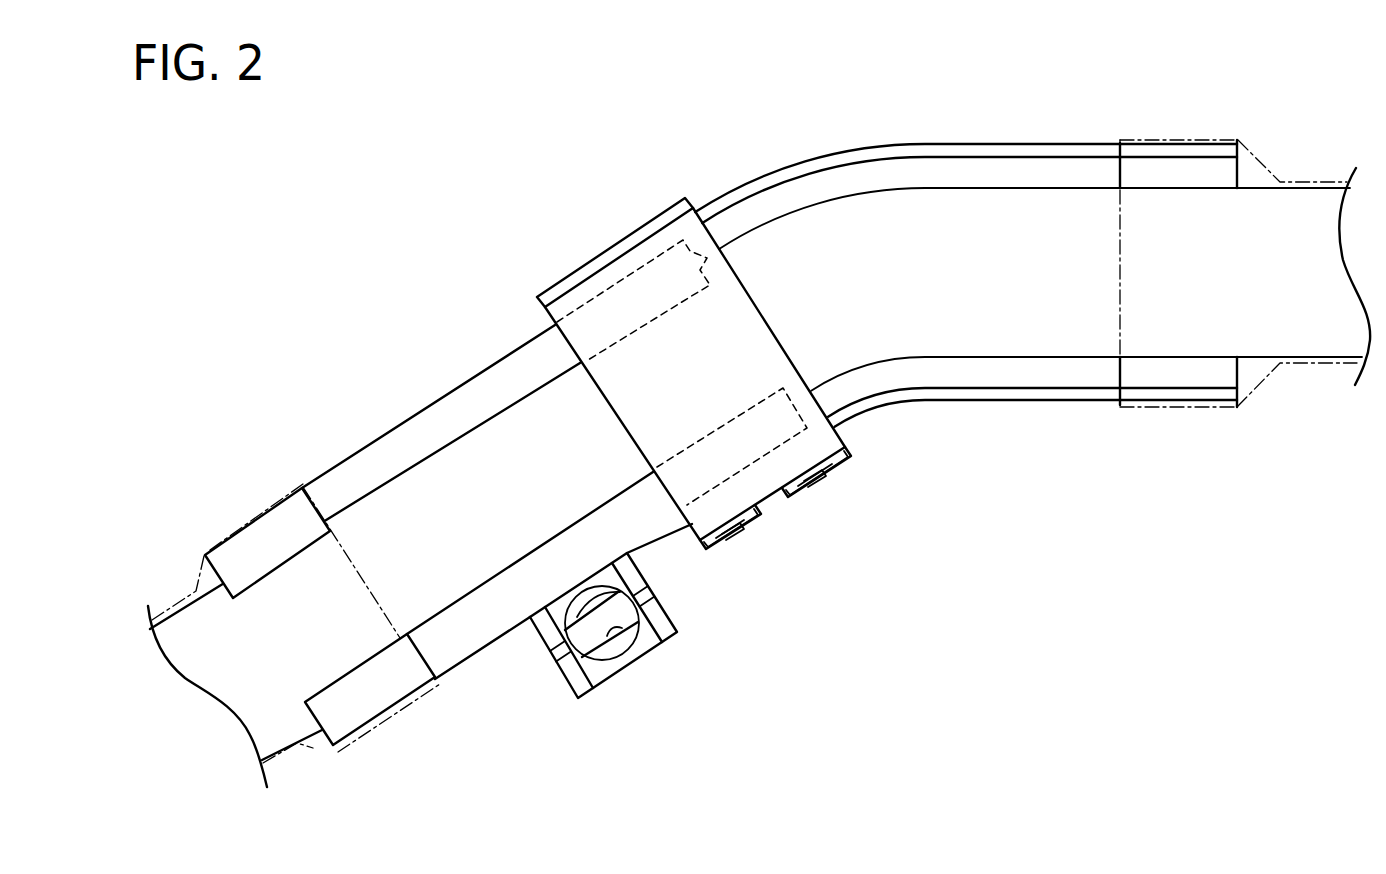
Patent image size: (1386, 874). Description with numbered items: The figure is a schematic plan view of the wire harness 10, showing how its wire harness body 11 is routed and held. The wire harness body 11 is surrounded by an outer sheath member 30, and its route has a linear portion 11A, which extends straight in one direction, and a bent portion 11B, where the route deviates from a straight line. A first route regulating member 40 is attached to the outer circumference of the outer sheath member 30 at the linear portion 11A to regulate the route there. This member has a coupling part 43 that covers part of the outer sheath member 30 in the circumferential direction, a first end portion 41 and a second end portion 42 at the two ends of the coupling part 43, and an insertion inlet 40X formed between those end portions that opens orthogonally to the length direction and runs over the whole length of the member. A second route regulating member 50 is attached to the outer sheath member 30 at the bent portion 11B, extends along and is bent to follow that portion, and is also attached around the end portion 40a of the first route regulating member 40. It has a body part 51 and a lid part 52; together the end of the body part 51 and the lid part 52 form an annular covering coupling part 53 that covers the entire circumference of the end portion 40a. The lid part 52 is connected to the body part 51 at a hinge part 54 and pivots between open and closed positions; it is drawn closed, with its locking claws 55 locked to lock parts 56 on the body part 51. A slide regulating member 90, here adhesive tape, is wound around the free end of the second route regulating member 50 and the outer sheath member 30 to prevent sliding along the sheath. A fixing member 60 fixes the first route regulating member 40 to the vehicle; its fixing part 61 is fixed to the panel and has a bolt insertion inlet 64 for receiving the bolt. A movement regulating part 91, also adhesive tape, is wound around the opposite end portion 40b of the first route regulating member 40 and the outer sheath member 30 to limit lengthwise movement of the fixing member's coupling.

The wire harness 10 is at (477, 236).
The wire harness body 11 is at (1065, 358).
The linear portion 11A is at (466, 447).
The bent portion 11B is at (860, 217).
The outer sheath member 30 is at (1000, 207).
The first route regulating member 40 is at (490, 367).
The end portion 40a is at (707, 260).
The end portion 40b is at (316, 746).
The insertion inlet 40X is at (430, 612).
The first end portion 41 is at (413, 480).
The second end portion 42 is at (543, 545).
The coupling part 43 is at (350, 472).
The second route regulating member 50 is at (993, 403).
The body part 51 is at (893, 383).
The lid part 52 is at (763, 342).
The covering coupling part 53 is at (619, 420).
The hinge part 54 is at (612, 247).
The locking claws 55 is at (730, 527).
The lock parts 56 is at (748, 508).
The fixing member 60 is at (666, 608).
The fixing part 61 is at (600, 677).
The bolt insertion inlet 64 is at (617, 632).
The slide regulating member 90 is at (1210, 408).
The movement regulating part 91 is at (207, 552).